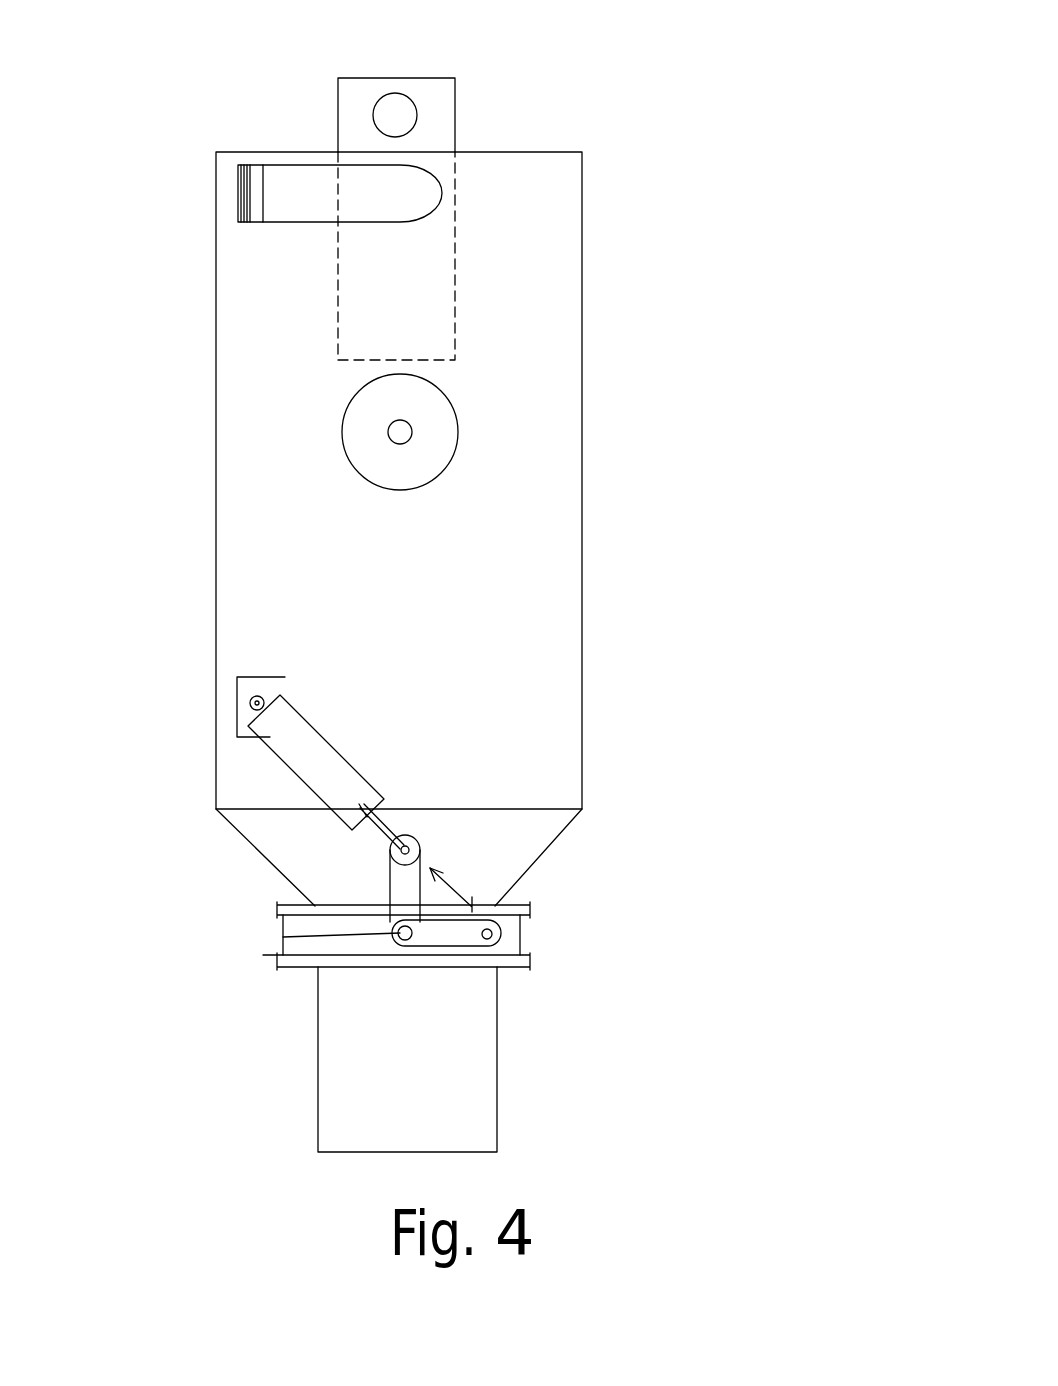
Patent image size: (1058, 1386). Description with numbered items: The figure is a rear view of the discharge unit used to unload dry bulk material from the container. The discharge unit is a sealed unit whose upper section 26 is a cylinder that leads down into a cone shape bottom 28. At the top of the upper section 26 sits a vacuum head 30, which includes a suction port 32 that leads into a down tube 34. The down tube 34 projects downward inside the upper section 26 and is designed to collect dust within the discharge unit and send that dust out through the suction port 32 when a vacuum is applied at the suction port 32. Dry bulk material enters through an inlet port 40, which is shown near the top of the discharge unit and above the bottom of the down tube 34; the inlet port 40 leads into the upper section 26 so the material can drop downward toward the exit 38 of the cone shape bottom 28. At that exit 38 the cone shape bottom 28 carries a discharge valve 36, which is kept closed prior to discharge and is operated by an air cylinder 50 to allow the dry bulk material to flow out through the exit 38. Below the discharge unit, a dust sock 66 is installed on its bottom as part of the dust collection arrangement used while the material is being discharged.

The upper section 26 is at (583, 581).
The cone shape bottom 28 is at (550, 842).
The vacuum head 30 is at (385, 78).
The suction port 32 is at (397, 117).
The down tube 34 is at (448, 342).
The discharge valve 36 is at (283, 937).
The exit 38 is at (525, 935).
The inlet port 40 is at (402, 202).
The air cylinder 50 is at (302, 760).
The dust sock 66 is at (433, 1083).